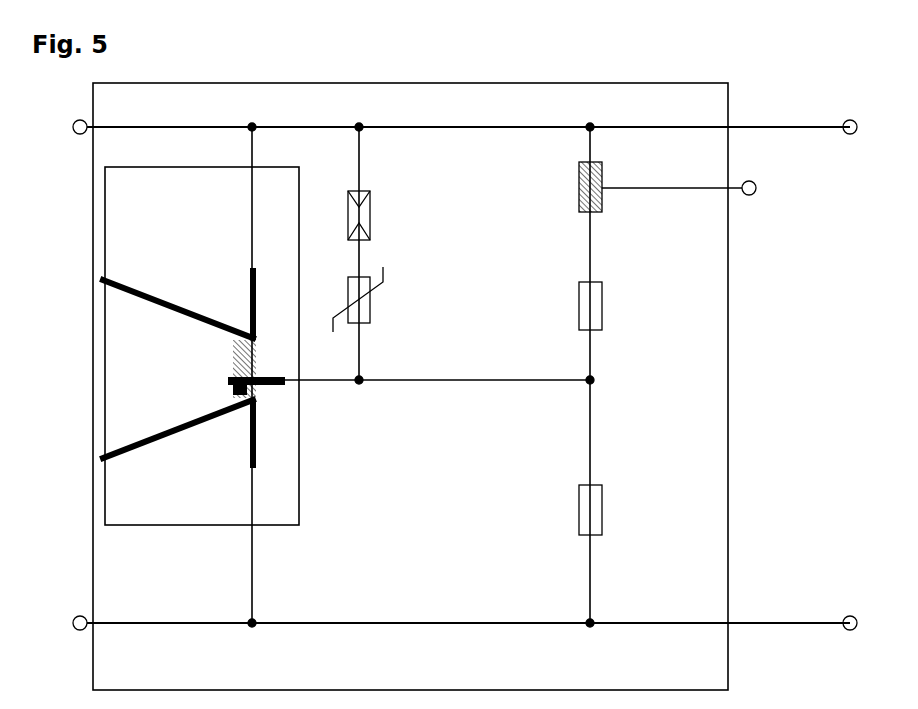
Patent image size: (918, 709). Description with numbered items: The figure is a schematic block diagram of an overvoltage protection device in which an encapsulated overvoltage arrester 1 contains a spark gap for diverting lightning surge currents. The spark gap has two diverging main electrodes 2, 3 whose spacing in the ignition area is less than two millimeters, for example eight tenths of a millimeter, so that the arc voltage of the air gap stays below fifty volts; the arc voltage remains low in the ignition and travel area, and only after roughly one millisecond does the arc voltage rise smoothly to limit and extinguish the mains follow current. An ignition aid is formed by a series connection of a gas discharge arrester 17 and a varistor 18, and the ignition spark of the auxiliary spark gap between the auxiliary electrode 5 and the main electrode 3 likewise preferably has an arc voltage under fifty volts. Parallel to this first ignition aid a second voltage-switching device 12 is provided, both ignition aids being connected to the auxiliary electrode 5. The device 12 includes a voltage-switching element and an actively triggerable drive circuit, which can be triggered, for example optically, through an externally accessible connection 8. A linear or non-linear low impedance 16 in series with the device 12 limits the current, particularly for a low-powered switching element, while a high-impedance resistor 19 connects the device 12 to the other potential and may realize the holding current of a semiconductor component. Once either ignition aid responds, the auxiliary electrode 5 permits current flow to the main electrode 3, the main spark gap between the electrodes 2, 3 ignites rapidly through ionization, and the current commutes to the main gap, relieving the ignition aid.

The encapsulated overvoltage arrester 1 is at (148, 261).
The main electrode 2 is at (262, 328).
The main electrode 3 is at (258, 412).
The auxiliary electrode 5 is at (290, 393).
The externally accessible connection 8 is at (757, 205).
The voltage-switching device 12 is at (609, 208).
The low impedance 16 is at (609, 310).
The gas discharge arrester 17 is at (387, 217).
The varistor 18 is at (392, 307).
The high-impedance resistor 19 is at (609, 508).